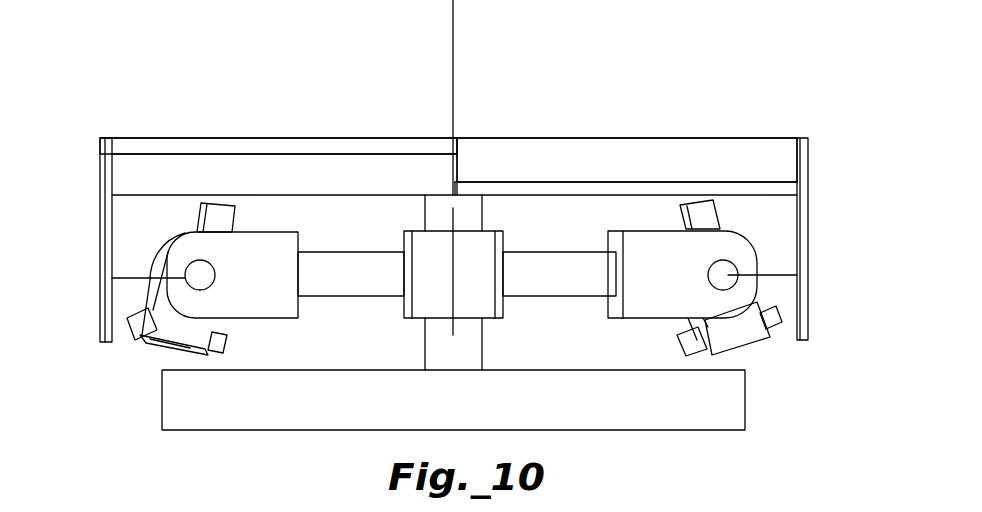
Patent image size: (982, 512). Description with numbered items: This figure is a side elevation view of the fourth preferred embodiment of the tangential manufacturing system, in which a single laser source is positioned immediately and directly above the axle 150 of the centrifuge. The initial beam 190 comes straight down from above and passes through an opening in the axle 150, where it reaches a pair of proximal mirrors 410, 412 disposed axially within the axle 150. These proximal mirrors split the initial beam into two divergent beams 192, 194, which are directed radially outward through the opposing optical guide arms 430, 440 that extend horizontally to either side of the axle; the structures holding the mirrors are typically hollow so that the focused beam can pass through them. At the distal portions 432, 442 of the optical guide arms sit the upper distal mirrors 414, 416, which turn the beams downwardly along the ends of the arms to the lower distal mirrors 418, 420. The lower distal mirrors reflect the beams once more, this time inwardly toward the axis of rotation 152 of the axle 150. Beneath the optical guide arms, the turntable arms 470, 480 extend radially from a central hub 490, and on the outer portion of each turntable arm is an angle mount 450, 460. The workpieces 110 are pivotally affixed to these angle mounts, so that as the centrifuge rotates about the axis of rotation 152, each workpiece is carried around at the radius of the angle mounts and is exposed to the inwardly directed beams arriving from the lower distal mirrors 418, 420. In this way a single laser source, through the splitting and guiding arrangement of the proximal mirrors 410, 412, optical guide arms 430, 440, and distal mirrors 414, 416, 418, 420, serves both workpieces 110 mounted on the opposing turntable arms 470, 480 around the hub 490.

The workpiece 110 is at (220, 222).
The axle 150 is at (468, 352).
The axis of rotation 152 is at (455, 272).
The initial beam 190 is at (455, 80).
The divergent beam 192 is at (278, 153).
The divergent beam 194 is at (640, 182).
The proximal mirror 410 is at (447, 148).
The proximal mirror 412 is at (455, 182).
The upper distal mirror 414 is at (797, 182).
The upper distal mirror 416 is at (101, 139).
The lower distal mirror 418 is at (797, 278).
The lower distal mirror 420 is at (112, 273).
The optical guide arm 430 is at (592, 137).
The distal portion 432 is at (626, 114).
The optical guide arm 440 is at (308, 141).
The distal portion 442 is at (278, 108).
The angle mount 450 is at (672, 295).
The angle mount 460 is at (227, 291).
The turntable arm 470 is at (560, 282).
The turntable arm 480 is at (337, 280).
The hub 490 is at (488, 248).